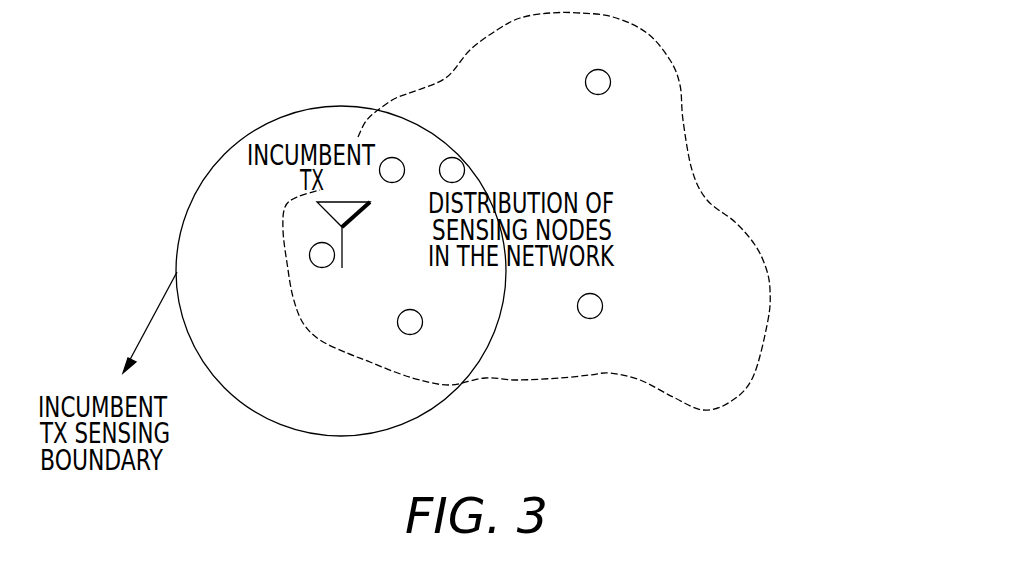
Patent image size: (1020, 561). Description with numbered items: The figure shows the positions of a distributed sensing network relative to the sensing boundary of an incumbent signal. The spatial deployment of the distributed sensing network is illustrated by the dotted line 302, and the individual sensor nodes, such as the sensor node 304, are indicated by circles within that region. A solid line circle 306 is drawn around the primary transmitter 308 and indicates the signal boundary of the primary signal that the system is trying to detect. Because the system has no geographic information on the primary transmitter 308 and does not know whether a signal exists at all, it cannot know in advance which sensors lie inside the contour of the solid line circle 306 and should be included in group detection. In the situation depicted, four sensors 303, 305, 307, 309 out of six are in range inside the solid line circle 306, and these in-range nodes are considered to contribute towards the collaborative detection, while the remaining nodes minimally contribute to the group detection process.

The dotted line 302 is at (680, 74).
The sensor 303 is at (395, 157).
The sensor node 304 is at (585, 82).
The sensor 305 is at (309, 254).
The solid line circle 306 is at (277, 120).
The sensor 307 is at (448, 158).
The primary transmitter 308 is at (343, 256).
The sensor 309 is at (410, 309).